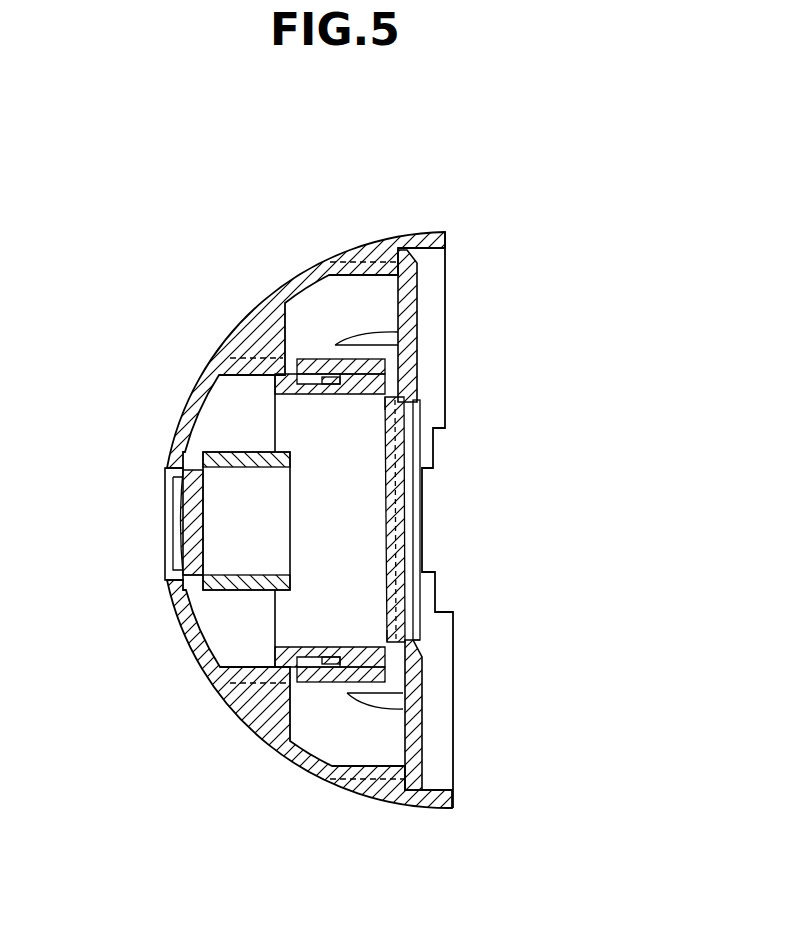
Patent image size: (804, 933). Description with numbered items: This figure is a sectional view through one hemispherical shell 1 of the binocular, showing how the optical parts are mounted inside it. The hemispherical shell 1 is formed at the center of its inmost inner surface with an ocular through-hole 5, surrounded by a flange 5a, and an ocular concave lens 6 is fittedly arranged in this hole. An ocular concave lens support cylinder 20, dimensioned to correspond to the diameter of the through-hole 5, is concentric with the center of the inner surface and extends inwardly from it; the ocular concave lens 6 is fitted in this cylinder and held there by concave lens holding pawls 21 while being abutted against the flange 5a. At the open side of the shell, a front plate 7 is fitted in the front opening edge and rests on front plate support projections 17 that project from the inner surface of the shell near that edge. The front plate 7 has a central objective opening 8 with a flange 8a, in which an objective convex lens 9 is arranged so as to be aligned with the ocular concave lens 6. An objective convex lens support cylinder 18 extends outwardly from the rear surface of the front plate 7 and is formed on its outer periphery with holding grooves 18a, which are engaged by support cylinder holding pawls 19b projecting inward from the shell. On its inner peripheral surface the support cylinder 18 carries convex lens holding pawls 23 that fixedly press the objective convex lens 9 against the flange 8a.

The hemispherical shell 1 is at (302, 268).
The ocular through-hole 5 is at (184, 488).
The flange 5a is at (200, 580).
The ocular concave lens 6 is at (180, 546).
The front plate 7 is at (416, 281).
The objective opening 8 is at (411, 560).
The flange 8a is at (405, 638).
The objective convex lens 9 is at (408, 487).
The front plate support projection 17 is at (392, 263).
The objective convex lens support cylinder 18 is at (273, 387).
The holding groove 18a is at (327, 380).
The support cylinder holding pawl 19b is at (310, 358).
The ocular concave lens support cylinder 20 is at (276, 592).
The concave lens holding pawl 21 is at (206, 458).
The convex lens holding pawl 23 is at (384, 400).